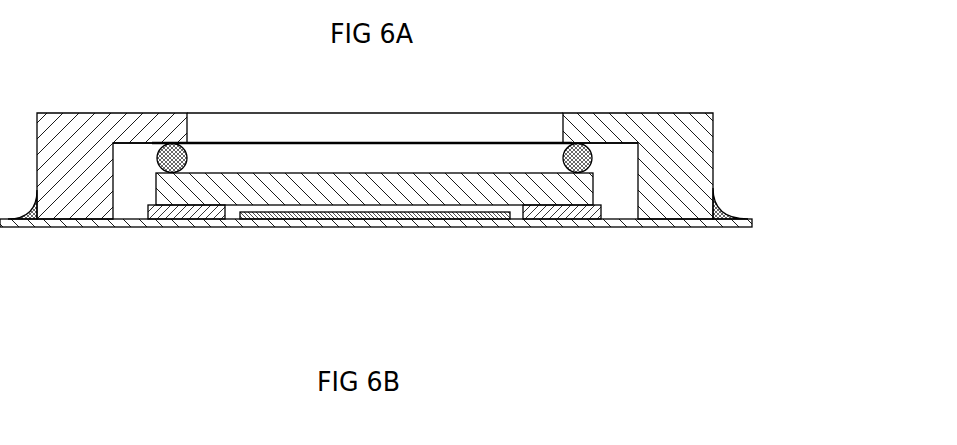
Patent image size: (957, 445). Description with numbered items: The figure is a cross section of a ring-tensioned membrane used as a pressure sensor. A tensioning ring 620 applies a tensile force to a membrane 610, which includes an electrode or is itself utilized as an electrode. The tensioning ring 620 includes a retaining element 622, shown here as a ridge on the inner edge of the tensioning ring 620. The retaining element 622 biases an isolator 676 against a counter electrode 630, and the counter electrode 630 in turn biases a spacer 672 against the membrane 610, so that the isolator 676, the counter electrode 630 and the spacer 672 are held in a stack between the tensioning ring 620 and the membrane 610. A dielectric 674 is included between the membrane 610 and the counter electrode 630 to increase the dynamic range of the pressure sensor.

The membrane 610 is at (640, 220).
The tensioning ring 620 is at (713, 150).
The retaining element 622 is at (597, 113).
The counter electrode 630 is at (293, 187).
The spacer 672 is at (158, 215).
The dielectric 674 is at (410, 213).
The isolator 676 is at (163, 153).